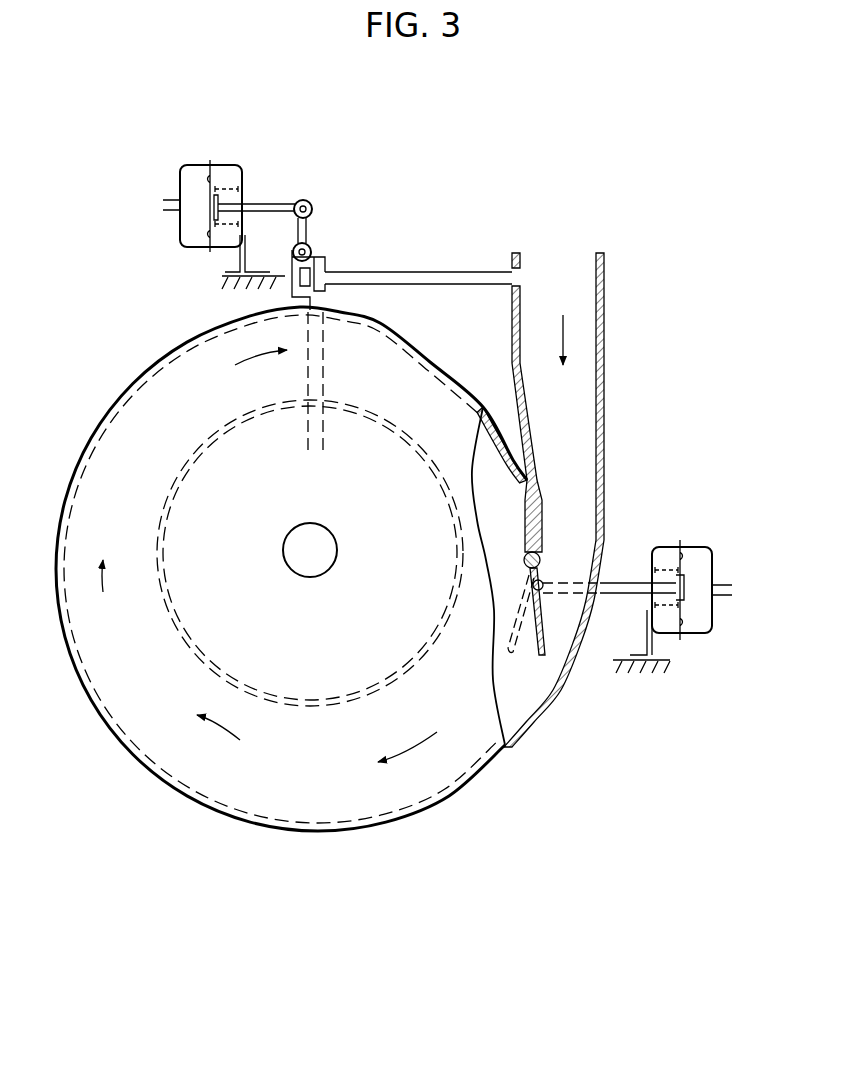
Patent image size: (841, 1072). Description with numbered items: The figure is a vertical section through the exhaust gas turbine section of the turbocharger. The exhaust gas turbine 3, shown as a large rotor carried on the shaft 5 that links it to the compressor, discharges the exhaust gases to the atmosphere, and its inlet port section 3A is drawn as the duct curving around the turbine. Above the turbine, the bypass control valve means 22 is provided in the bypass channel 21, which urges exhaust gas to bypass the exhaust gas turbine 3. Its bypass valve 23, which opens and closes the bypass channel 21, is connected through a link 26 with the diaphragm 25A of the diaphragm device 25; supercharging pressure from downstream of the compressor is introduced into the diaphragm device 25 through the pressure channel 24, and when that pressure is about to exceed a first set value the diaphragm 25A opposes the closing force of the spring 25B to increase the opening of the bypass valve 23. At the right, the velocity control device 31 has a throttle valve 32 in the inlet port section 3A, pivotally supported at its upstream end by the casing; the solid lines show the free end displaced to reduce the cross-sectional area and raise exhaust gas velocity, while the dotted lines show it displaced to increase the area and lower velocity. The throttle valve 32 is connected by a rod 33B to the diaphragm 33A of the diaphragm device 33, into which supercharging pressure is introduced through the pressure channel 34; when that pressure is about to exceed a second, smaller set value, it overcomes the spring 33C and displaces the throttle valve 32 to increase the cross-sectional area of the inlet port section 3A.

The exhaust gas turbine 3 is at (80, 425).
The inlet port section 3A is at (590, 462).
The shaft 5 is at (325, 562).
The bypass channel 21 is at (440, 270).
The bypass control valve means 22 is at (190, 255).
The bypass valve 23 is at (325, 266).
The pressure channel 24 is at (165, 200).
The diaphragm device 25 is at (180, 235).
The diaphragm 25A is at (208, 170).
The spring 25B is at (218, 185).
The link 26 is at (313, 215).
The velocity control device 31 is at (700, 530).
The throttle valve 32 is at (545, 648).
The diaphragm device 33 is at (700, 634).
The diaphragm 33A is at (684, 553).
The rod 33B is at (620, 580).
The spring 33C is at (662, 565).
The pressure channel 34 is at (728, 595).